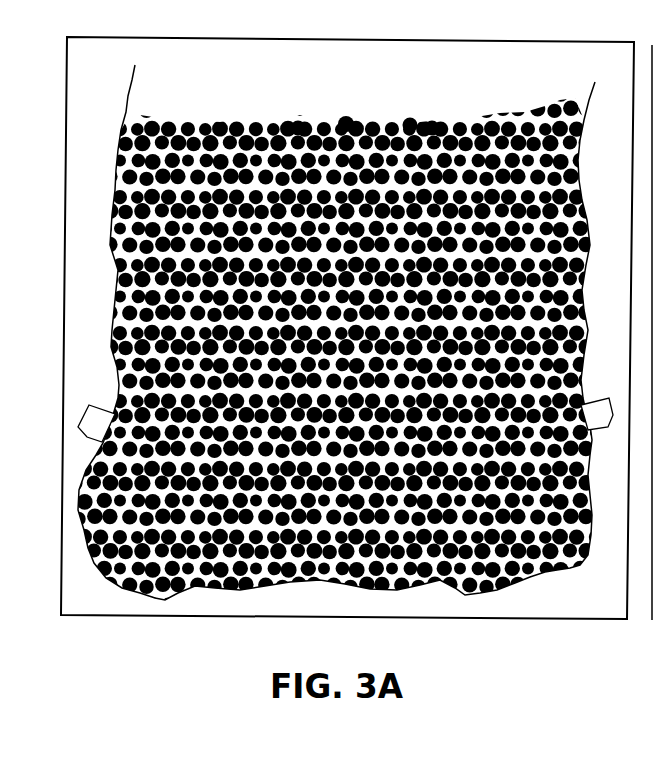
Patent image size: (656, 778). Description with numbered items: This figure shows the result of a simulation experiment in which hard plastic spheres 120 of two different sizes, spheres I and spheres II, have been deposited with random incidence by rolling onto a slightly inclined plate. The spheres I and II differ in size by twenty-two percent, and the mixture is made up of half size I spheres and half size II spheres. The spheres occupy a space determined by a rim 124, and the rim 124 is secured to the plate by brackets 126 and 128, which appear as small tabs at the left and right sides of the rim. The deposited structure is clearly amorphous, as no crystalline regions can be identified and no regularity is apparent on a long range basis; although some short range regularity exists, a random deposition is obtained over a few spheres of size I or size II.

The hard plastic spheres 120 is at (592, 48).
The rim 124 is at (117, 158).
The bracket 126 is at (88, 422).
The bracket 128 is at (597, 404).
The size I spheres I is at (412, 118).
The size II spheres II is at (345, 116).